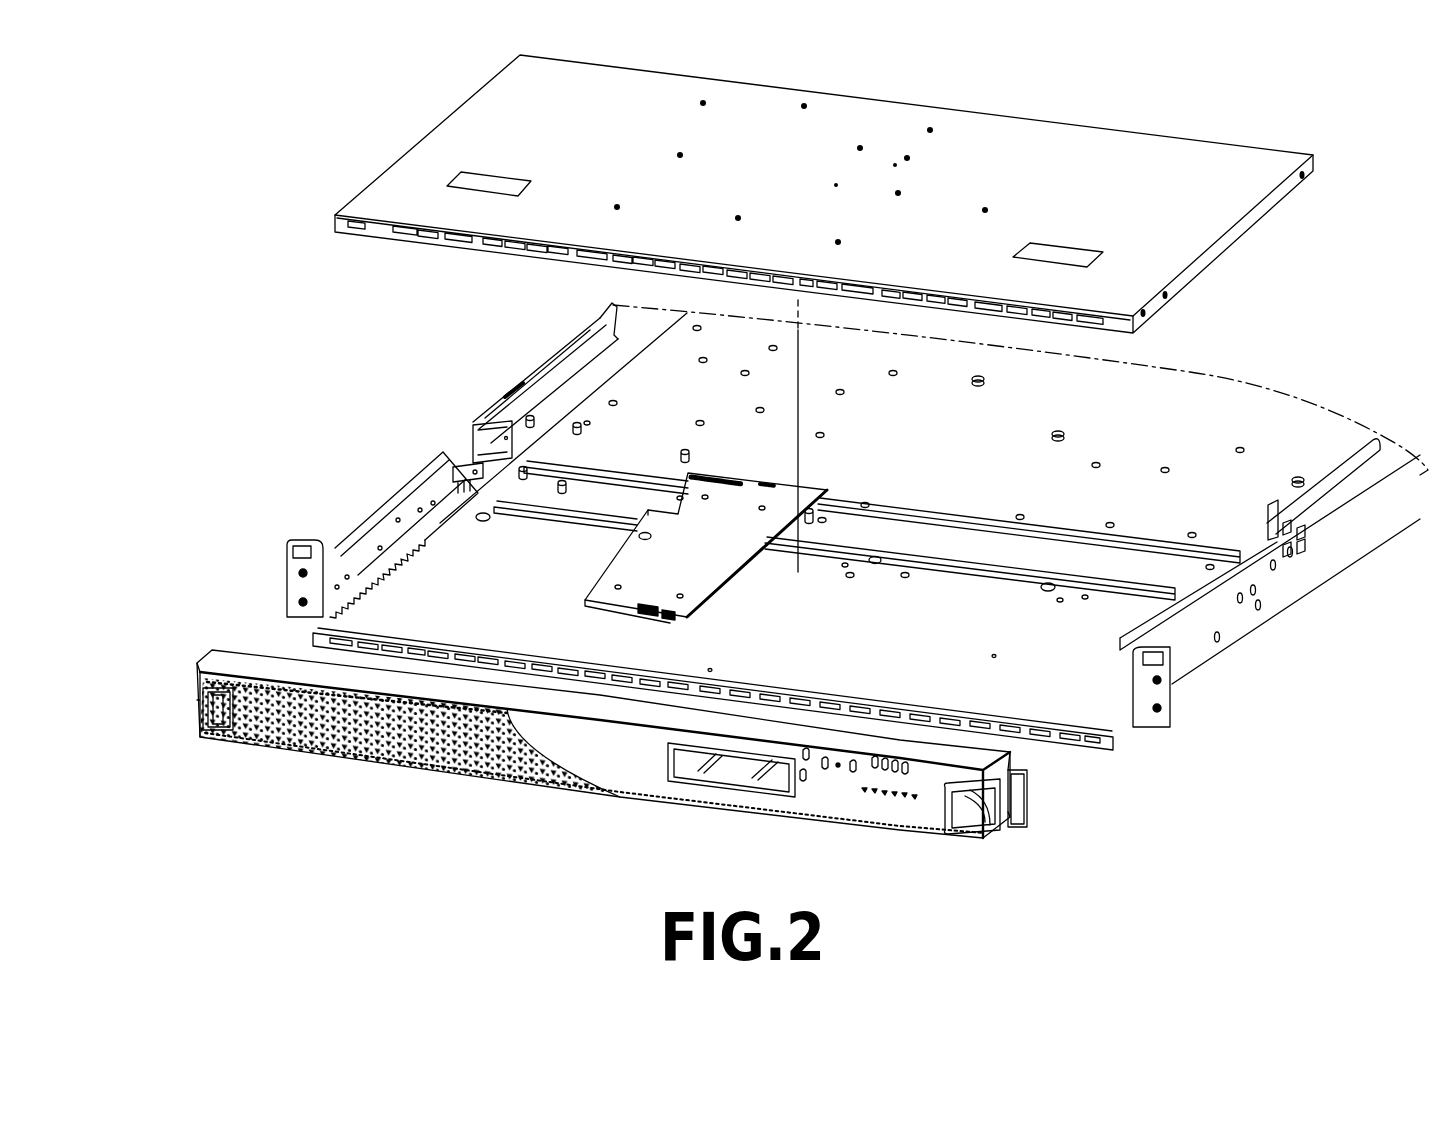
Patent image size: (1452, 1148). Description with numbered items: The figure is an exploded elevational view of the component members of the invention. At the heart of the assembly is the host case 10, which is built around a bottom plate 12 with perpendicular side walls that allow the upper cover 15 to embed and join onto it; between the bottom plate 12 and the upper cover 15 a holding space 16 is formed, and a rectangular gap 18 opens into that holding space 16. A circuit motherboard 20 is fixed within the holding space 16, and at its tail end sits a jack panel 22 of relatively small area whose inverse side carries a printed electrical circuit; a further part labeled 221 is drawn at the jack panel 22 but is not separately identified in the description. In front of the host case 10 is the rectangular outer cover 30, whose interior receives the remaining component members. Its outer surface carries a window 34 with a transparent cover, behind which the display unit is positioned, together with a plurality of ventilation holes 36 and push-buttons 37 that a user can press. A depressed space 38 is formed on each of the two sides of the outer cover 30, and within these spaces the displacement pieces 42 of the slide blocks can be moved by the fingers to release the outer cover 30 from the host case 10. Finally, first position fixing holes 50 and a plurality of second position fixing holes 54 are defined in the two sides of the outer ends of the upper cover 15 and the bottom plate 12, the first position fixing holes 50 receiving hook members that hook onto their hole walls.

The host case 10 is at (1324, 339).
The bottom plate 12 is at (1115, 705).
The upper cover 15 is at (1048, 137).
The holding space 16 is at (1240, 512).
The rectangular gap 18 is at (1050, 708).
The circuit motherboard 20 is at (668, 543).
The jack panel 22 is at (672, 620).
The pin header connector 221 is at (645, 605).
The outer cover 30 is at (594, 780).
The window 34 is at (722, 775).
The ventilation holes 36 is at (400, 762).
The push-buttons 37 is at (900, 778).
The depressed space 38 is at (948, 830).
The displacement pieces 42 is at (975, 818).
The first position fixing holes 50 is at (360, 222).
The second position fixing holes 54 is at (457, 243).